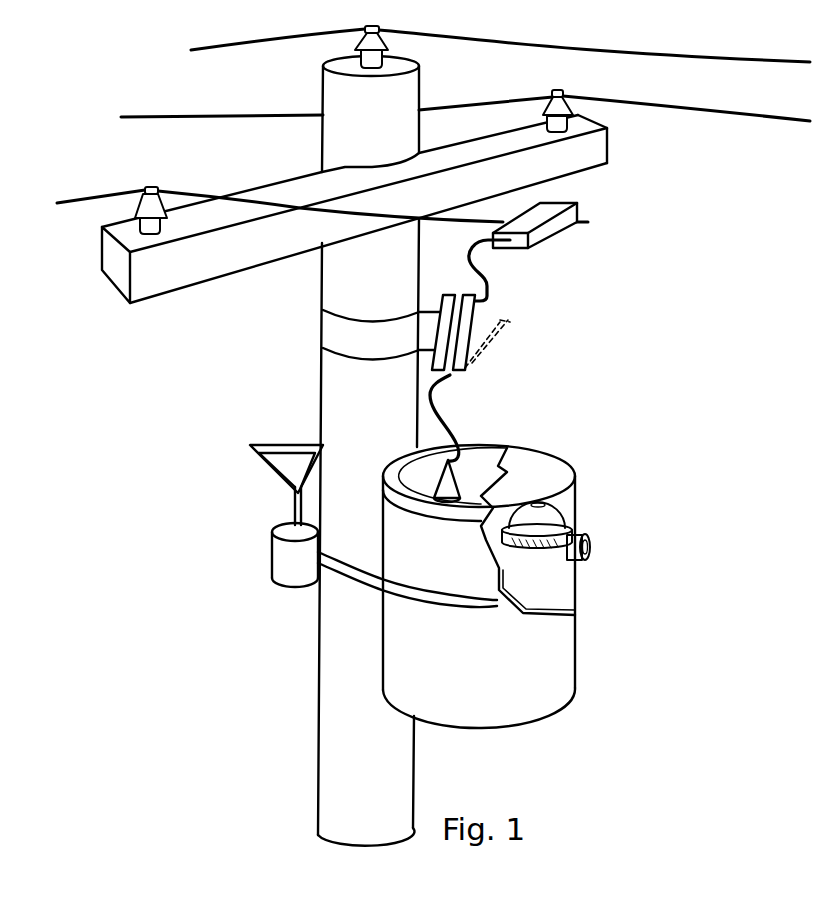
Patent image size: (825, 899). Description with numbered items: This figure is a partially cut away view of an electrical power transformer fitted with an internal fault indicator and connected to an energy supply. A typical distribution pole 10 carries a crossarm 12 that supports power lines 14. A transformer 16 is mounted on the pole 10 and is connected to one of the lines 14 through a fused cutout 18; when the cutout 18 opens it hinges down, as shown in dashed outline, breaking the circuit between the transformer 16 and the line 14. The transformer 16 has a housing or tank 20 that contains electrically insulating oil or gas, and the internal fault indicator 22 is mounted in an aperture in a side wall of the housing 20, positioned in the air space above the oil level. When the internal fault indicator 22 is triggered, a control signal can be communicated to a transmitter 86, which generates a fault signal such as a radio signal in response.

The distribution pole 10 is at (348, 750).
The crossarm 12 is at (583, 150).
The power lines 14 is at (578, 230).
The transformer 16 is at (535, 662).
The fused cutout 18 is at (508, 337).
The housing 20 is at (565, 463).
The internal fault indicator 22 is at (540, 515).
The transmitter 86 is at (285, 562).